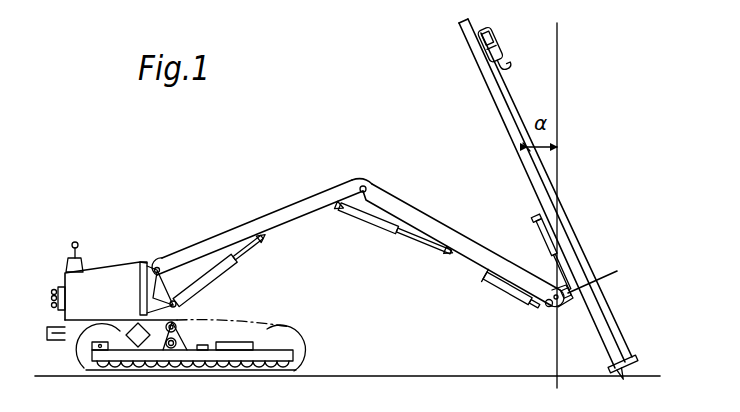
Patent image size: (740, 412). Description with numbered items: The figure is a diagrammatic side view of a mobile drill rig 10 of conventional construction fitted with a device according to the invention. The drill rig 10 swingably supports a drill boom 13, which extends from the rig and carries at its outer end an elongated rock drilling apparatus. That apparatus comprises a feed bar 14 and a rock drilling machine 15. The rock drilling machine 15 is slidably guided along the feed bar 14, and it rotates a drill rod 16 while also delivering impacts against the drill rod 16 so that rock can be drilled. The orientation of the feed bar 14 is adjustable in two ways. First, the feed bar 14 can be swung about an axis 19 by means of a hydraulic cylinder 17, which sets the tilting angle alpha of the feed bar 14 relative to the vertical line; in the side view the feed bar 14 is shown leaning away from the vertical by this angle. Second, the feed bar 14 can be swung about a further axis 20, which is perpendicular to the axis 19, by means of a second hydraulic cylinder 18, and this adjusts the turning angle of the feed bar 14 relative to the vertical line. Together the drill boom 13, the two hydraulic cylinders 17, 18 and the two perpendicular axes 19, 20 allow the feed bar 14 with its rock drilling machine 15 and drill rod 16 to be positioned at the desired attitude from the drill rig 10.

The drill rig 10 is at (247, 322).
The drill boom 13 is at (392, 190).
The feed bar 14 is at (528, 165).
The rock drilling machine 15 is at (491, 44).
The drill rod 16 is at (563, 228).
The hydraulic cylinder 17 is at (518, 295).
The hydraulic cylinder 18 is at (540, 246).
The axis 19 is at (555, 310).
The axis 20 is at (596, 283).